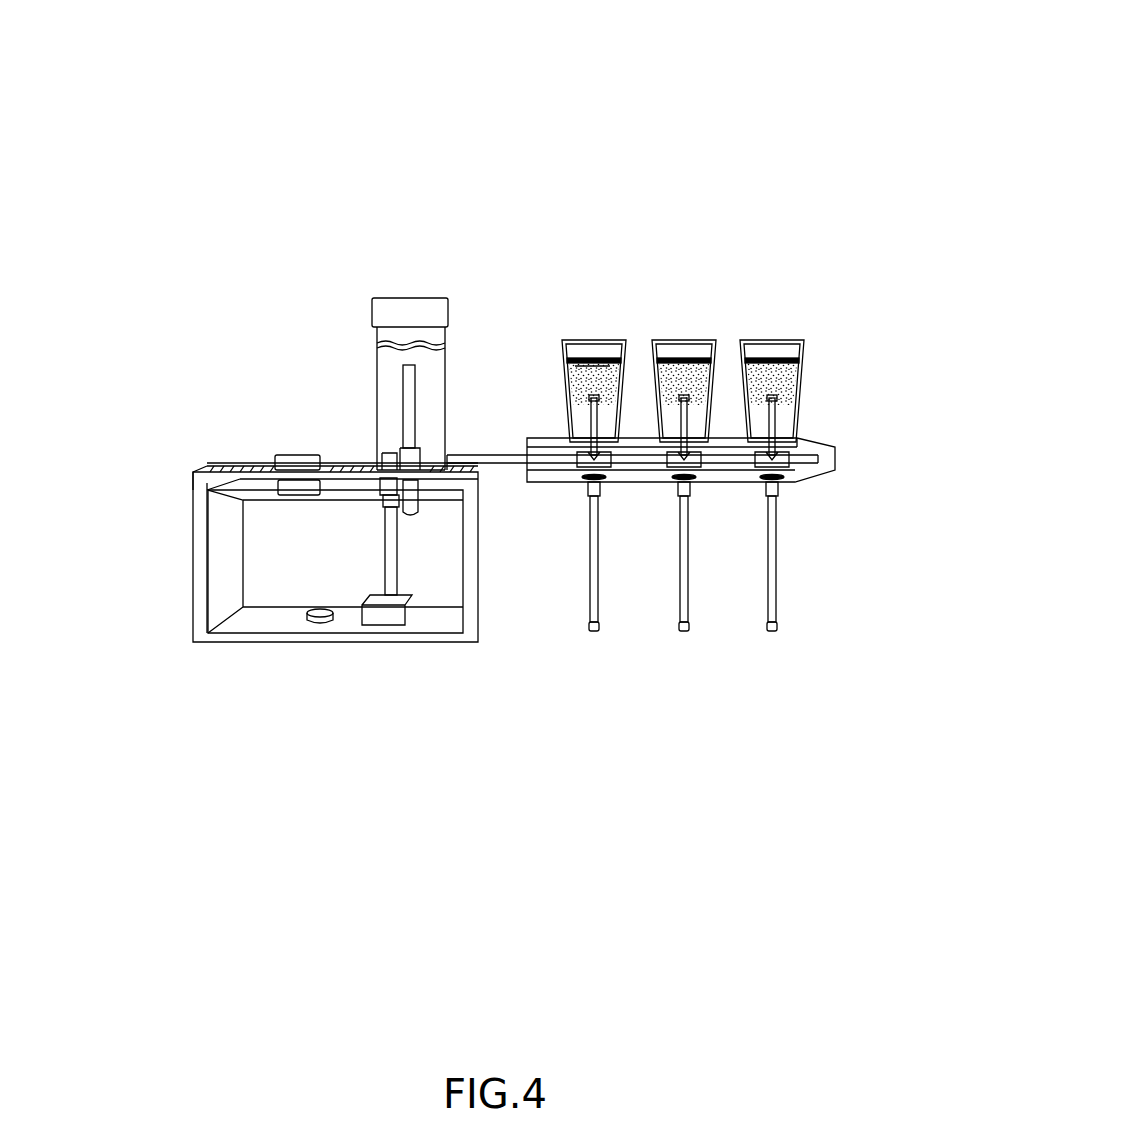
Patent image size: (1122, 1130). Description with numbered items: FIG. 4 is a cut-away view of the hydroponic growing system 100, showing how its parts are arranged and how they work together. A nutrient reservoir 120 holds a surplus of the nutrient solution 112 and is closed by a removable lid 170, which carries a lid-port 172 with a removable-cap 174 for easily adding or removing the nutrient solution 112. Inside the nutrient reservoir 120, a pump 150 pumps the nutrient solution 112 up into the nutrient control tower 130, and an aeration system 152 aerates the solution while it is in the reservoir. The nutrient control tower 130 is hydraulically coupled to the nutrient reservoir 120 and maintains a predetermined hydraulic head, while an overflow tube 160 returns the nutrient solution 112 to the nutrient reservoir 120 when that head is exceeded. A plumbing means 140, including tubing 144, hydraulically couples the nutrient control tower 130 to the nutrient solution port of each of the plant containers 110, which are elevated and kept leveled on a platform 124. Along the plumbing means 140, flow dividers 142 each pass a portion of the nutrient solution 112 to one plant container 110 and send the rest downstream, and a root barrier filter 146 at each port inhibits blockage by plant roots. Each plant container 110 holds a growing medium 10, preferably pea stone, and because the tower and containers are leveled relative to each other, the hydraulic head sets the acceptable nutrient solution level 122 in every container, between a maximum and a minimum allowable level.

The hydroponic growing system 100 is at (695, 92).
The growing medium 10 is at (578, 370).
The plant containers 110 is at (826, 332).
The nutrient solution 112 is at (247, 503).
The nutrient reservoir 120 is at (190, 585).
The acceptable nutrient solution level 122 is at (377, 345).
The platform 124 is at (818, 488).
The nutrient control tower 130 is at (356, 338).
The plumbing means 140 is at (512, 428).
The flow dividers 142 is at (597, 458).
The tubing 144 is at (548, 458).
The root barrier filter 146 is at (773, 428).
The pump 150 is at (390, 598).
The aeration system 152 is at (320, 652).
The overflow tube 160 is at (410, 377).
The lid 170 is at (215, 450).
The lid-port 172 is at (285, 483).
The removable-cap 174 is at (297, 453).